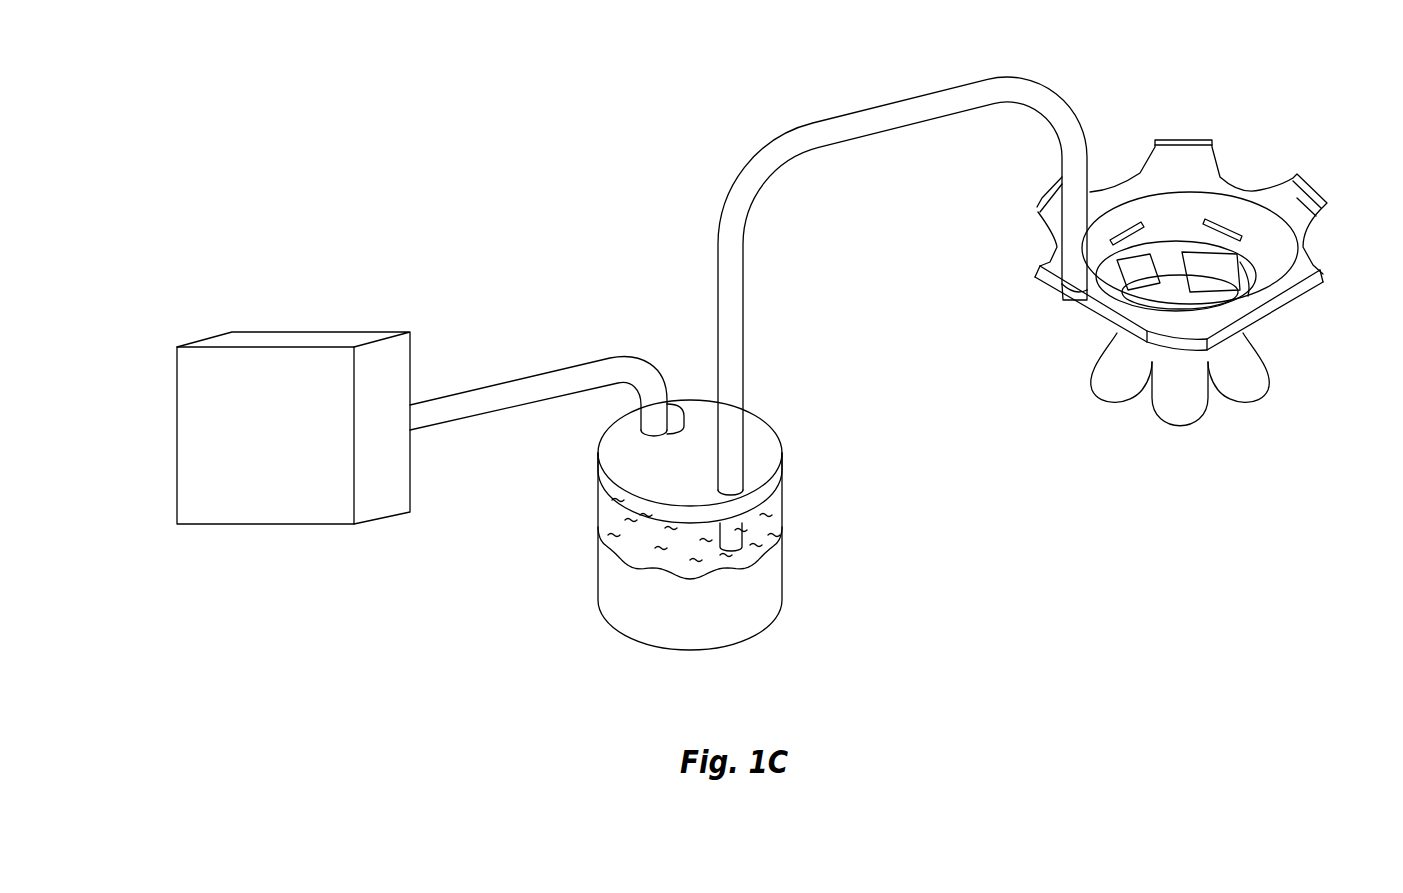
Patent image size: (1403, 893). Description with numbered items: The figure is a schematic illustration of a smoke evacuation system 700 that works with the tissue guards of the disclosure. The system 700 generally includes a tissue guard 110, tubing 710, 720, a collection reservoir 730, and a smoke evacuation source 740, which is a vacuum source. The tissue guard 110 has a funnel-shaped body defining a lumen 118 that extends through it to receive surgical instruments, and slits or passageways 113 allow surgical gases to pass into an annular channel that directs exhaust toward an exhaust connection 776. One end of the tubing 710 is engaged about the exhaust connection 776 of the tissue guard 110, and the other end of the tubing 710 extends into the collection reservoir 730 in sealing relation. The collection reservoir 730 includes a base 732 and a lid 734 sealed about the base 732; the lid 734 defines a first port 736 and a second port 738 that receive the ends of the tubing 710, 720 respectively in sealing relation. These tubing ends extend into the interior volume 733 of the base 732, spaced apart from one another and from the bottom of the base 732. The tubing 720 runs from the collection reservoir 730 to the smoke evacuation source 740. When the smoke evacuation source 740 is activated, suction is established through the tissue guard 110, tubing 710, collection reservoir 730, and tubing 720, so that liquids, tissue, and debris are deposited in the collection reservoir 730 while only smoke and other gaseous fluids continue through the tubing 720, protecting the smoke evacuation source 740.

The smoke evacuation system 700 is at (234, 256).
The smoke evacuation source 740 is at (256, 452).
The tubing 720 is at (508, 380).
The second port 738 is at (680, 423).
The collection reservoir 730 is at (797, 504).
The lid 734 is at (755, 427).
The first port 736 is at (745, 487).
The base 732 is at (598, 490).
The interior volume 733 is at (605, 550).
The tubing 710 is at (892, 103).
The tissue guard 110 is at (1213, 410).
The passageways 113 is at (1123, 220).
The lumen 118 is at (1245, 272).
The exhaust connection 776 is at (1060, 293).